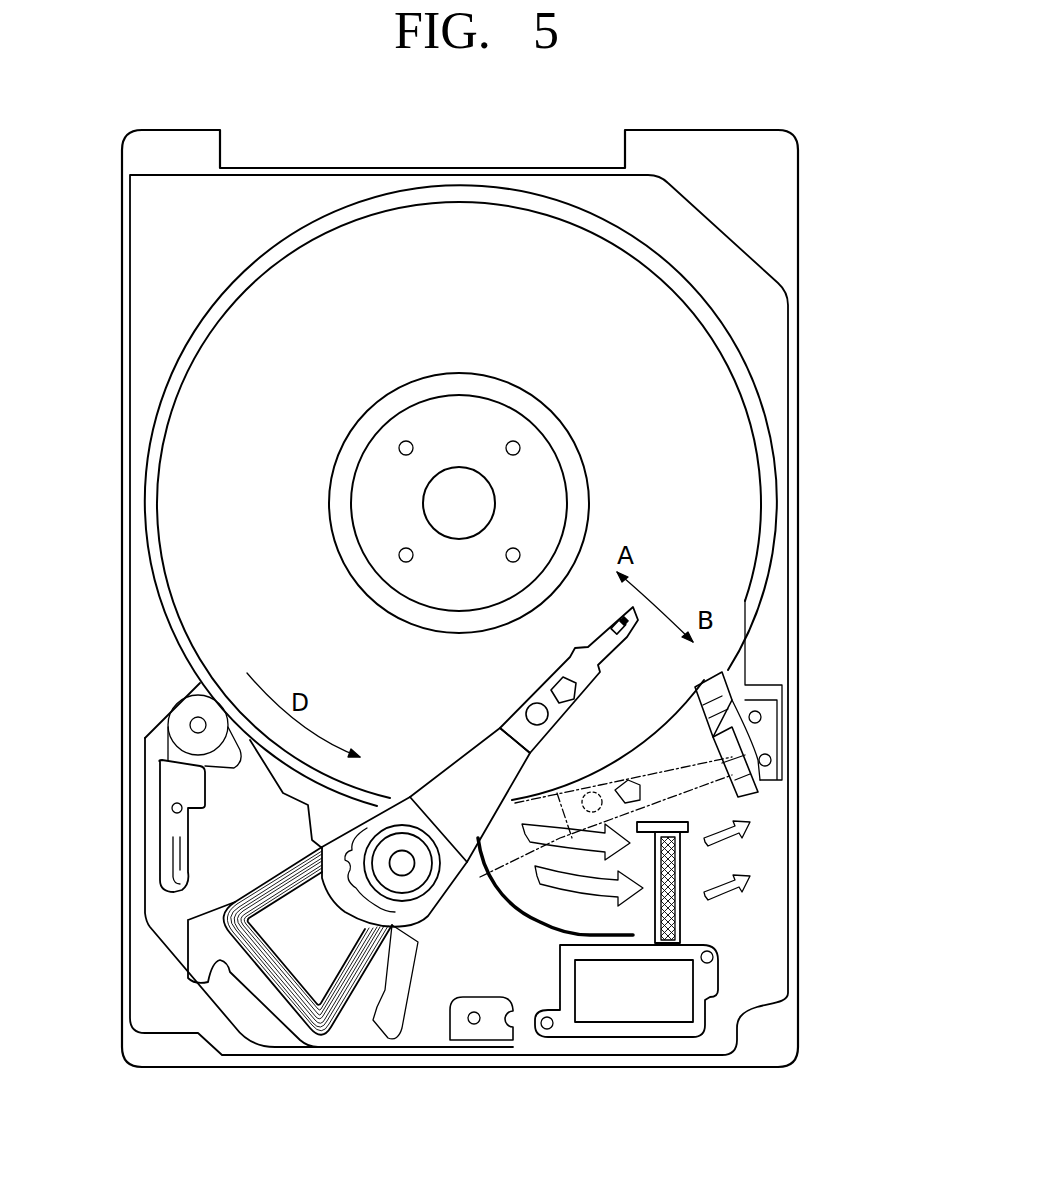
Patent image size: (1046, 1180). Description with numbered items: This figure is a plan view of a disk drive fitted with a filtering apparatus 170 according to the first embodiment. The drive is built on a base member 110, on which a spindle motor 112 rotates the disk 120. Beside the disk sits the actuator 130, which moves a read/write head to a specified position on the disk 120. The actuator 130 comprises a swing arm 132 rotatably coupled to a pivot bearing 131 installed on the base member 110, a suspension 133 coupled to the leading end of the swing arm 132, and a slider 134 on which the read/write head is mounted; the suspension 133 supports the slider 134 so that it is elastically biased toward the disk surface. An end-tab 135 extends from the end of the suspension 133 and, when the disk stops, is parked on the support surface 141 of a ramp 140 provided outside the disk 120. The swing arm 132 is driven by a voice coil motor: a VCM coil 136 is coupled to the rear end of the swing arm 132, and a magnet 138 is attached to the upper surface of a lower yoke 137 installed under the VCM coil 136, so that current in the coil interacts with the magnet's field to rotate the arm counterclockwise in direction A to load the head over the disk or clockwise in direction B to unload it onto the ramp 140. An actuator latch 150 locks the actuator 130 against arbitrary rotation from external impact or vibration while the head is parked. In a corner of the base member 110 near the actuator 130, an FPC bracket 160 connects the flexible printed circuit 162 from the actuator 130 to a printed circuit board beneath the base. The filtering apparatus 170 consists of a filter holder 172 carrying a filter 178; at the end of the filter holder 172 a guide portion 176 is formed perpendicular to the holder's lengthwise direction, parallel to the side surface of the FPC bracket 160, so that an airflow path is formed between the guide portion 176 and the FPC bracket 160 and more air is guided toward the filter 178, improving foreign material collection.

The base member 110 is at (773, 635).
The spindle motor 112 is at (490, 422).
The disk 120 is at (740, 467).
The actuator 130 is at (420, 772).
The pivot bearing 131 is at (405, 866).
The swing arm 132 is at (472, 760).
The suspension 133 is at (563, 660).
The slider 134 is at (623, 632).
The end-tab 135 is at (638, 612).
The VCM coil 136 is at (258, 973).
The lower yoke 137 is at (275, 1033).
The magnet 138 is at (397, 1017).
The ramp 140 is at (732, 707).
The support surface 141 is at (710, 708).
The actuator latch 150 is at (167, 820).
The FPC bracket 160 is at (623, 1015).
The flexible printed circuit 162 is at (533, 910).
The filtering apparatus 170 is at (880, 795).
The filter holder 172 is at (680, 915).
The guide portion 176 is at (690, 826).
The filter 178 is at (680, 872).